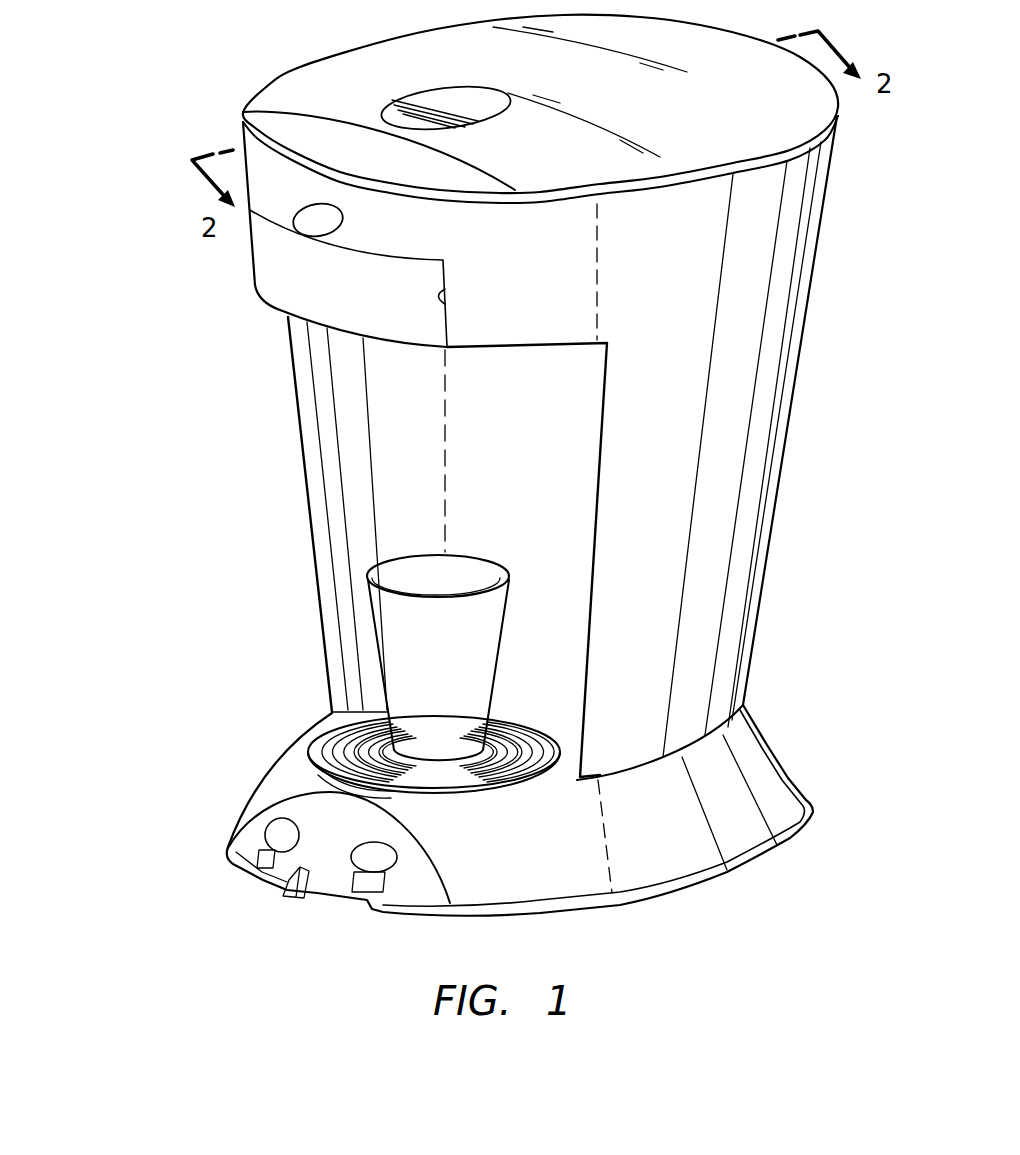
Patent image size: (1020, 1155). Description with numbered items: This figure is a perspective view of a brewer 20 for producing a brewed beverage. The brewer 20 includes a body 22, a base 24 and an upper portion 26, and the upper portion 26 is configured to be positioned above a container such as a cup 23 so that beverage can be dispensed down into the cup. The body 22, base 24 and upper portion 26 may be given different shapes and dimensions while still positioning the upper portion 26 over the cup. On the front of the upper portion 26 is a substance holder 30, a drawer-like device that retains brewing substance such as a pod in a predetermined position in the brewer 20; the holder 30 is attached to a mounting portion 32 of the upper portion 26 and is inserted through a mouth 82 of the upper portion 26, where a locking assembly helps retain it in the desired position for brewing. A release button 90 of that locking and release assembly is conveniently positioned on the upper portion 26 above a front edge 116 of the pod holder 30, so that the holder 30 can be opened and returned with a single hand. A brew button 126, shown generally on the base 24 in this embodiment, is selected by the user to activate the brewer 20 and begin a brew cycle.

The brewer 20 is at (134, 389).
The body 22 is at (300, 517).
The cup 23 is at (383, 660).
The base 24 is at (233, 806).
The upper portion 26 is at (222, 102).
The substance holder 30 is at (292, 302).
The mounting portion 32 is at (462, 353).
The mouth 82 is at (450, 298).
The release button 90 is at (318, 220).
The front edge 116 is at (403, 317).
The brew button 126 is at (282, 838).